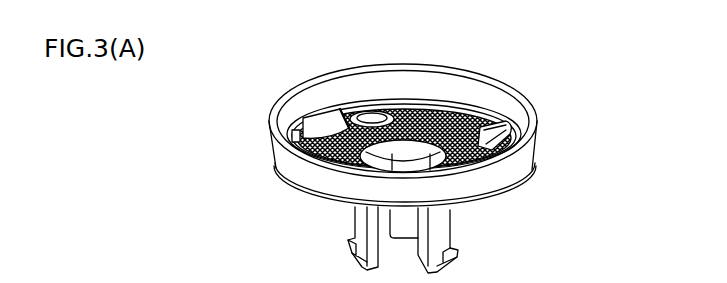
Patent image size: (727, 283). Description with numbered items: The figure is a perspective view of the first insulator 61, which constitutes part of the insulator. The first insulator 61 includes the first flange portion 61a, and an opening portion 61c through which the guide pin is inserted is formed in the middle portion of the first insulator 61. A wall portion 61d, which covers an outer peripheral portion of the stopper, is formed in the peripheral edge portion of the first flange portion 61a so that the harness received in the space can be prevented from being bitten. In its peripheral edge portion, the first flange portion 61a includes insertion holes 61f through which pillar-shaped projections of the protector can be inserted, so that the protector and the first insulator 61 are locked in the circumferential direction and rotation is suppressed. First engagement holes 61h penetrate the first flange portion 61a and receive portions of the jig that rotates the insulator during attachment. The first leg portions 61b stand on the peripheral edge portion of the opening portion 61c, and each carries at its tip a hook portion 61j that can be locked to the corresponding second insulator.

The first insulator 61 is at (395, 152).
The first flange portion 61a is at (470, 119).
The first leg portion 61b is at (455, 226).
The opening portion 61c is at (412, 156).
The wall portion 61d is at (276, 148).
The insertion hole 61f is at (313, 129).
The first engagement hole 61h is at (365, 113).
The hook portion 61j is at (350, 252).